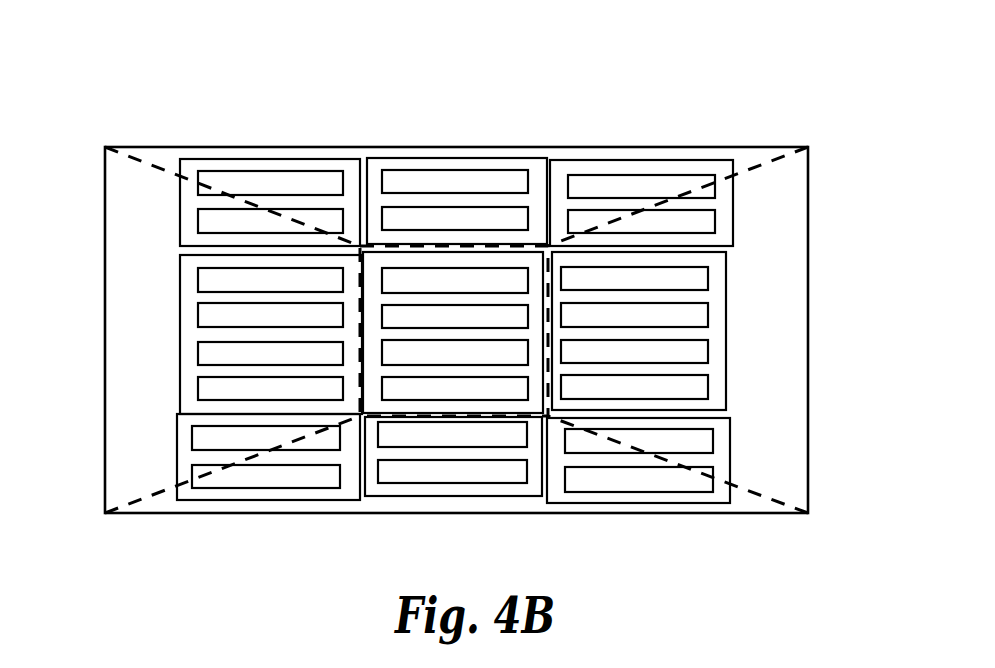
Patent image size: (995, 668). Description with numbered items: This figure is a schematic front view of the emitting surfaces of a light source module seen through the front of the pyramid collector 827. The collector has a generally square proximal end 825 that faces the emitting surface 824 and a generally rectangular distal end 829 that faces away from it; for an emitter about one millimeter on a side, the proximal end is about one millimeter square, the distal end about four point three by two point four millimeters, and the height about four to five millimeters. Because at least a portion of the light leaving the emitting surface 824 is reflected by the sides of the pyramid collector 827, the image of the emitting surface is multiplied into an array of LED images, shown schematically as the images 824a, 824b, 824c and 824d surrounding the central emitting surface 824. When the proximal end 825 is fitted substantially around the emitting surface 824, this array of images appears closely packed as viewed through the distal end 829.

The pyramid collector 827 is at (183, 67).
The distal end 829 is at (808, 316).
The emitting surface 824 is at (458, 318).
The image 824a is at (677, 337).
The image 824b is at (247, 333).
The image 824c is at (454, 450).
The image 824d is at (500, 169).
The proximal end 825 is at (405, 244).